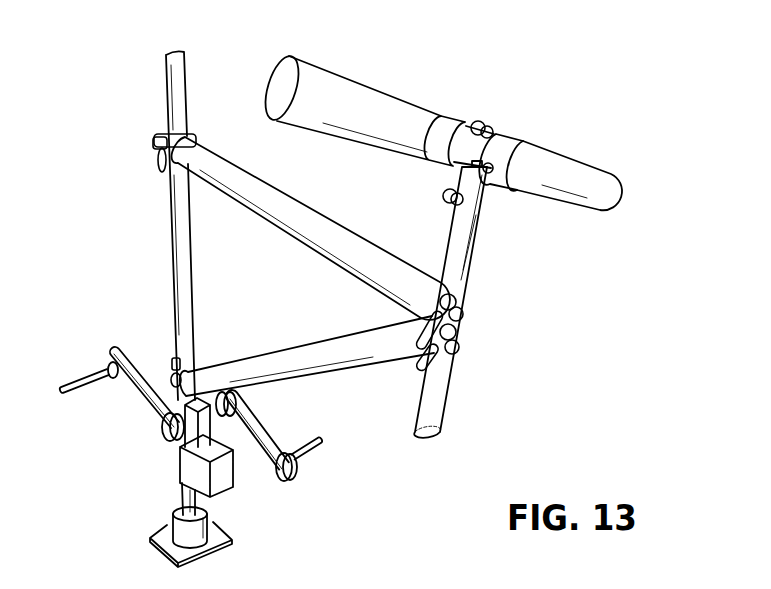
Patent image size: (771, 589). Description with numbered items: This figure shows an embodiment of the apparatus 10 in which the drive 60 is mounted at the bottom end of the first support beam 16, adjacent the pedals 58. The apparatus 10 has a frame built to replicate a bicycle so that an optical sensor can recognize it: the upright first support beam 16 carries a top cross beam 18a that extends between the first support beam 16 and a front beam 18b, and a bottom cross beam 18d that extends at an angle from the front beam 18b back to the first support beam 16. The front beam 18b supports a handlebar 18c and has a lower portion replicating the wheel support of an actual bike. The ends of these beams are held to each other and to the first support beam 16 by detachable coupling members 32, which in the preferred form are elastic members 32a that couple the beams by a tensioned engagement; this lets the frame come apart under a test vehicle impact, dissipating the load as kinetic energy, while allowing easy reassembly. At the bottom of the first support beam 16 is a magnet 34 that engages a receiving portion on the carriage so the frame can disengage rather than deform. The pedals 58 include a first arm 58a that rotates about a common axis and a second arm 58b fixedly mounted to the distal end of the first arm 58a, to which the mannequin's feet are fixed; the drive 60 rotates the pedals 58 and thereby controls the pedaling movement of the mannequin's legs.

The apparatus 10 is at (447, 58).
The first support beam 16 is at (177, 218).
The top cross beam 18a is at (255, 190).
The front beam 18b is at (482, 238).
The handlebar 18c is at (549, 164).
The bottom cross beam 18d is at (300, 357).
The detachable coupling member 32 is at (313, 224).
The elastic member 32a is at (153, 141).
The magnet 34 is at (217, 534).
The pedals 58 is at (72, 412).
The first arm 58a is at (137, 397).
The second arm 58b is at (72, 382).
The drive 60 is at (162, 485).